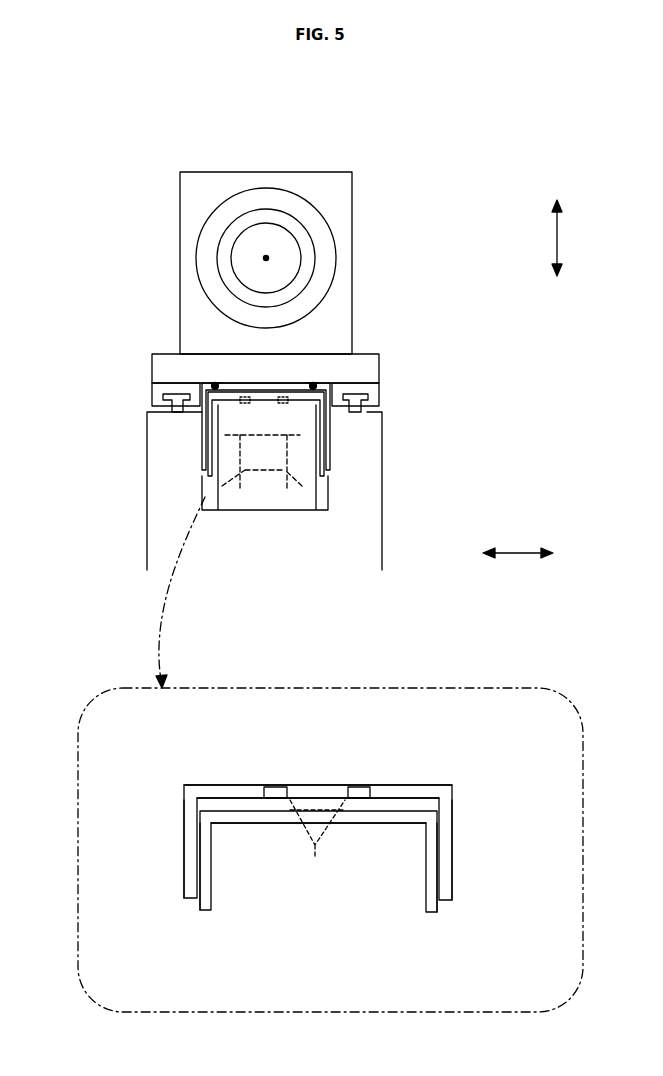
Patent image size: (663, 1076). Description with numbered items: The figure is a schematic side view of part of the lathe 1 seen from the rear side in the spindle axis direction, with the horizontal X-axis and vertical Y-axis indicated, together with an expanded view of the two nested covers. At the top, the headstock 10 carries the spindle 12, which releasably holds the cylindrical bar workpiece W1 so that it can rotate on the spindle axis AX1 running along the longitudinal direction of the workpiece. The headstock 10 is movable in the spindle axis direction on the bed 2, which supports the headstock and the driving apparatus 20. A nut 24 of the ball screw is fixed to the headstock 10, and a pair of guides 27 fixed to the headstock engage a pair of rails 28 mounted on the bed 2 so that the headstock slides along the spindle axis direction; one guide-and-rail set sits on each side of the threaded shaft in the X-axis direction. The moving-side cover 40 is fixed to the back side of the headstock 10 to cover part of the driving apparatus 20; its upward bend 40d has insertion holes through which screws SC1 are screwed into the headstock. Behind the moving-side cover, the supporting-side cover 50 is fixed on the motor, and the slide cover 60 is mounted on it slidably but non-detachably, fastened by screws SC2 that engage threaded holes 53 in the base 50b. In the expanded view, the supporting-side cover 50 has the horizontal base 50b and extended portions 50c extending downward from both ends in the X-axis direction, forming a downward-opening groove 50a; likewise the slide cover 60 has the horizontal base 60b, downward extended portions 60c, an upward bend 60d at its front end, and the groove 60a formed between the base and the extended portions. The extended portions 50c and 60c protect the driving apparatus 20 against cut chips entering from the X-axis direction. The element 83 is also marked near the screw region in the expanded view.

The lathe 1 is at (166, 137).
The bed 2 is at (382, 521).
The headstock 10 is at (352, 210).
The spindle 12 is at (303, 220).
The workpiece W1 is at (261, 228).
The spindle axis AX1 is at (266, 258).
The moving-side cover 40 is at (334, 380).
The bend 40d is at (316, 384).
The rail 28 is at (152, 386).
The guide 27 is at (165, 397).
The slide cover 60 is at (331, 388).
The supporting-side cover 50 is at (212, 455).
The screw SC1 is at (310, 382).
The screw SC2 is at (283, 397).
The driving apparatus 20 is at (314, 467).
The nut 24 is at (275, 492).
The base 60b is at (412, 798).
The bend 60d is at (207, 785).
The extended portion 60c is at (184, 816).
The groove 60a is at (237, 812).
The base 50b is at (392, 811).
The extended portion 50c is at (203, 912).
The groove 50a is at (255, 824).
The solder pad 83 is at (315, 790).
The threaded hole 53 is at (315, 850).